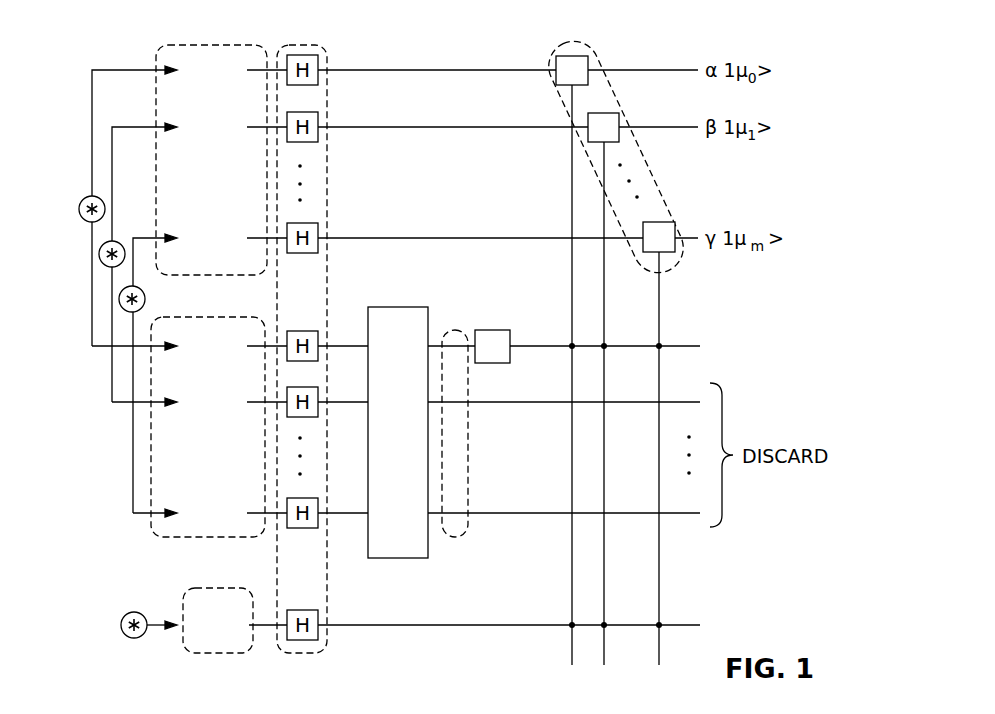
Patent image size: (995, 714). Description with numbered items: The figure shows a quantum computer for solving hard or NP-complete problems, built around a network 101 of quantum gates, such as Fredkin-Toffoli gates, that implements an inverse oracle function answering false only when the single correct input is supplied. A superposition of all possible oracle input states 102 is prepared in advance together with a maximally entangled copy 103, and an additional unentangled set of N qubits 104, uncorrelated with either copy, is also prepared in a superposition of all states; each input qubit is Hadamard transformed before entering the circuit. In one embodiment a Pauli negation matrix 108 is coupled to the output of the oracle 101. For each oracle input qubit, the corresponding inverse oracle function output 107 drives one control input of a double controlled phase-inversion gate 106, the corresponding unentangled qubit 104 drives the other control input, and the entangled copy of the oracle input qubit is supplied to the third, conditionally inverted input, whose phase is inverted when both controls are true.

The network of quantum gates 101 is at (400, 306).
The superposition of all possible oracle input states 102 is at (178, 45).
The maximally entangled copy 103 is at (230, 317).
The unentangled set of N qubits 104 is at (190, 593).
The double controlled phase-inversion gate 106 is at (590, 46).
The inverse oracle function output 107 is at (468, 428).
The Pauli negation matrix 108 is at (497, 330).